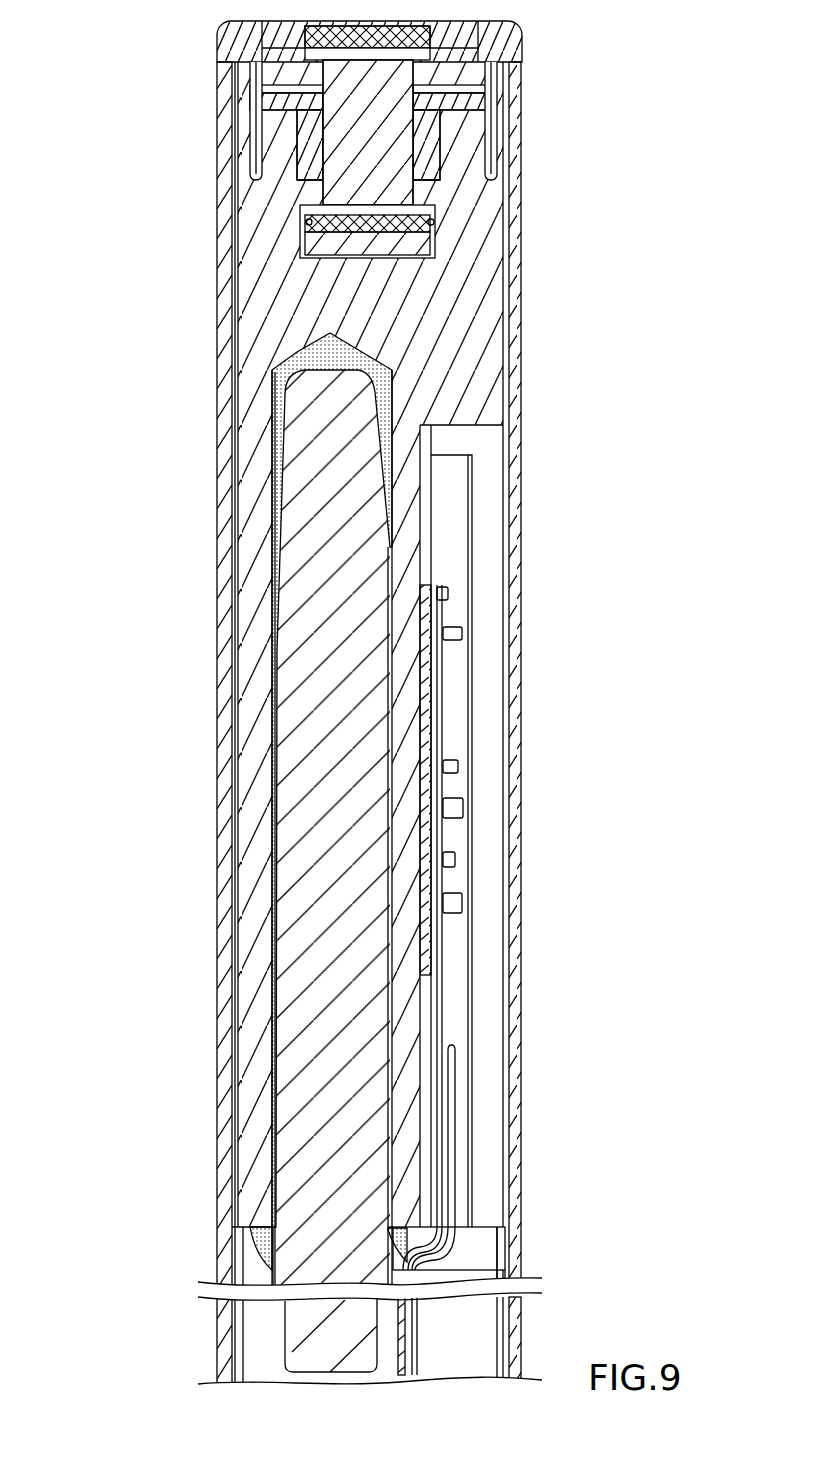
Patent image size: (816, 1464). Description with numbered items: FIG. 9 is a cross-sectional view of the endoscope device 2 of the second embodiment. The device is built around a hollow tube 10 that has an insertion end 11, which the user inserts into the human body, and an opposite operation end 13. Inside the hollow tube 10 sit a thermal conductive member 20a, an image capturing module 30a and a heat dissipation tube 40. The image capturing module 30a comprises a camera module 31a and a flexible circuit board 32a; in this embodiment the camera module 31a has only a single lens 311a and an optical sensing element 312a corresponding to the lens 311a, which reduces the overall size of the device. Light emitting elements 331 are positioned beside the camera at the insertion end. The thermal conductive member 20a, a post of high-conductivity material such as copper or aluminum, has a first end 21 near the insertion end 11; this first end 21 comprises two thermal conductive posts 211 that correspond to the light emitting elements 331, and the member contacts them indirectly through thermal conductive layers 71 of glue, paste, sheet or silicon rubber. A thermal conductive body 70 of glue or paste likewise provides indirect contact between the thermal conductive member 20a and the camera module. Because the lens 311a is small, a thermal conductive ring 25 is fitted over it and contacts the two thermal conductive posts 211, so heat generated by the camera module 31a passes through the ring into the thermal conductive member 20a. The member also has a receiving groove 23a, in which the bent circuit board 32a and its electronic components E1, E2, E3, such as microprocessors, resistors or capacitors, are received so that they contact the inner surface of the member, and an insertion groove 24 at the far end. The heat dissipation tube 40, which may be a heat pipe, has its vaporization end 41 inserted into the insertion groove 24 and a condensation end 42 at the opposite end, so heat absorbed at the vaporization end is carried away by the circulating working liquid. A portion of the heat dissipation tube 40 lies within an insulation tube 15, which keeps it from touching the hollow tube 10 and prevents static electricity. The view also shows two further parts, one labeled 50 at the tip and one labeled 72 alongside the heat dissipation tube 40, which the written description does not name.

The endoscope device 2 is at (92, 98).
The hollow tube 10 is at (222, 290).
The insertion end 11 is at (233, 90).
The operation end 13 is at (237, 1365).
The insulation tube 15 is at (505, 1337).
The thermal conductive member 20a is at (497, 348).
The first end 21 is at (436, 258).
The thermal conductive posts 211 is at (248, 178).
The receiving groove 23a is at (502, 465).
The insertion groove 24 is at (398, 554).
The thermal conductive ring 25 is at (432, 222).
The image capturing module 30a is at (679, 112).
The camera module 31a is at (622, 98).
The lens 311a is at (488, 126).
The optical sensing element 312a is at (495, 98).
The circuit board 32a is at (448, 990).
The light emitting elements 331 is at (512, 56).
The heat dissipation tube 40 is at (300, 580).
The vaporization end 41 is at (300, 392).
The condensation end 42 is at (287, 1320).
The cap 50 is at (222, 22).
The thermal conductive body 70 is at (298, 224).
The thermal conductive layer 71 is at (240, 120).
The porous layer 72 is at (300, 352).
The electronic component E1 is at (456, 766).
The electronic component E2 is at (460, 808).
The electronic component E3 is at (458, 903).